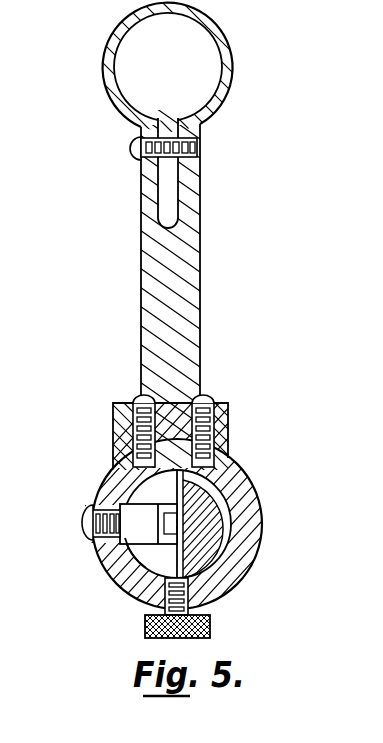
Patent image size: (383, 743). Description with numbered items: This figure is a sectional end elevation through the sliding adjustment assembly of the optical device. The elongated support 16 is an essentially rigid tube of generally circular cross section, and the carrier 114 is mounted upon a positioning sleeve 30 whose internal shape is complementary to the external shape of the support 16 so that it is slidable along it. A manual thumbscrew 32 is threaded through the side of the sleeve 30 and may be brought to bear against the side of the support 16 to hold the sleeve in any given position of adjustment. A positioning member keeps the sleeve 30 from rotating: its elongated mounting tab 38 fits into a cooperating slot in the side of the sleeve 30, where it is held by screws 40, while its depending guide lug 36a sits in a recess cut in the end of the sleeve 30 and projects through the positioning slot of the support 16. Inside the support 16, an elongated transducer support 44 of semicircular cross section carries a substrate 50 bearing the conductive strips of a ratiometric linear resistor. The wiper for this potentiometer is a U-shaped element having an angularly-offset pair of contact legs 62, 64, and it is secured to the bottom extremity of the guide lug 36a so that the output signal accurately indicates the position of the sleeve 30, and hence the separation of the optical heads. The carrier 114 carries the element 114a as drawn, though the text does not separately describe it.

The carrier 114 is at (187, 243).
The set screw 114a is at (130, 146).
The elongated support 44 is at (233, 457).
The contact leg 62 is at (128, 462).
The positioning sleeve 30 is at (240, 495).
The elongated support 16 is at (227, 525).
The guide lug 36a is at (142, 513).
The screws 40 is at (90, 511).
The mounting tab 38 is at (95, 542).
The contact leg 64 is at (112, 575).
The substrate 50 is at (160, 592).
The thumbscrew 32 is at (220, 623).